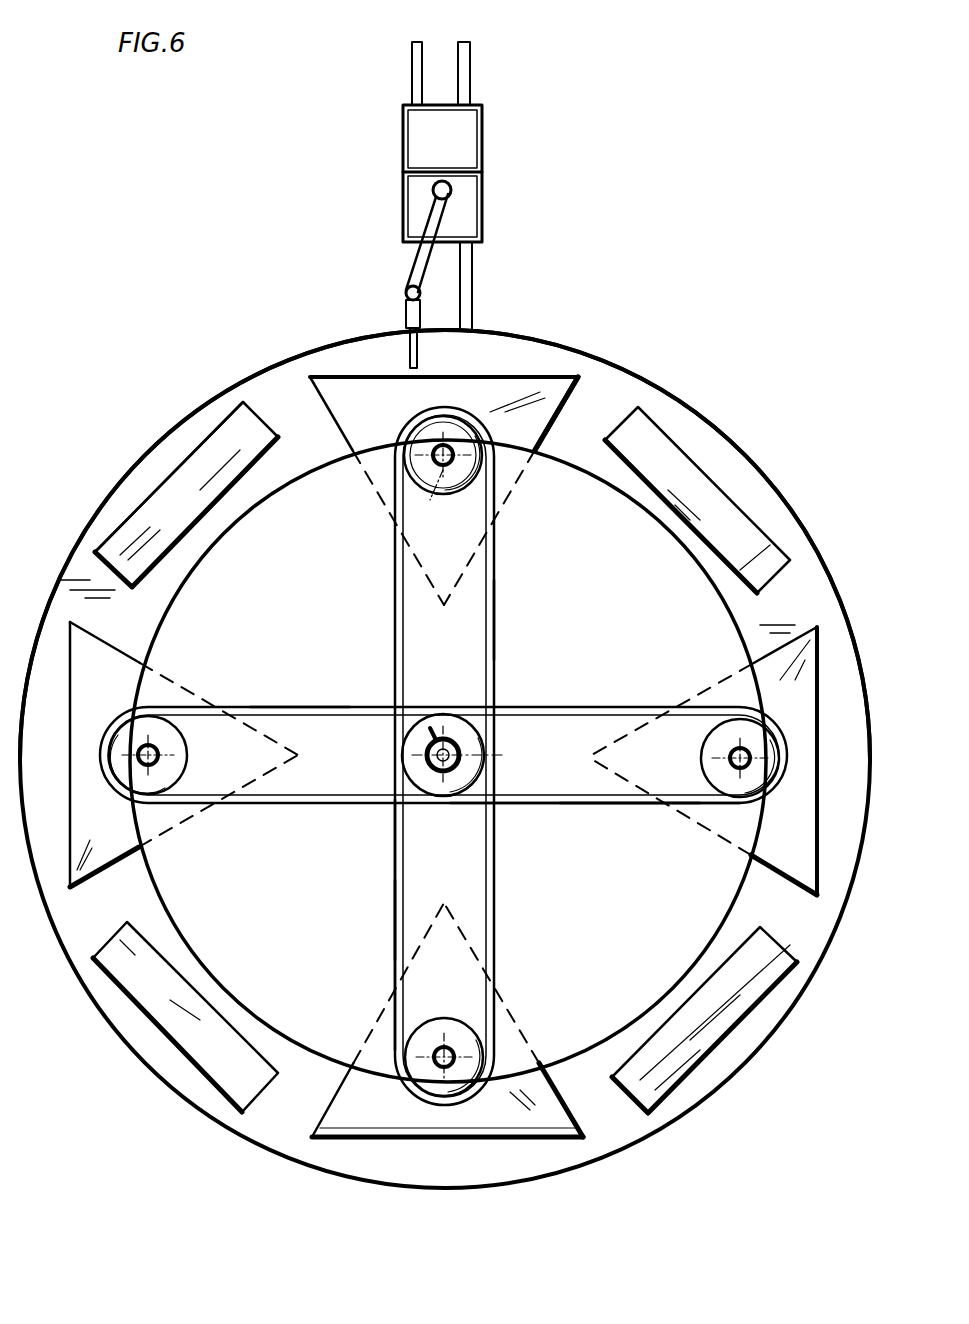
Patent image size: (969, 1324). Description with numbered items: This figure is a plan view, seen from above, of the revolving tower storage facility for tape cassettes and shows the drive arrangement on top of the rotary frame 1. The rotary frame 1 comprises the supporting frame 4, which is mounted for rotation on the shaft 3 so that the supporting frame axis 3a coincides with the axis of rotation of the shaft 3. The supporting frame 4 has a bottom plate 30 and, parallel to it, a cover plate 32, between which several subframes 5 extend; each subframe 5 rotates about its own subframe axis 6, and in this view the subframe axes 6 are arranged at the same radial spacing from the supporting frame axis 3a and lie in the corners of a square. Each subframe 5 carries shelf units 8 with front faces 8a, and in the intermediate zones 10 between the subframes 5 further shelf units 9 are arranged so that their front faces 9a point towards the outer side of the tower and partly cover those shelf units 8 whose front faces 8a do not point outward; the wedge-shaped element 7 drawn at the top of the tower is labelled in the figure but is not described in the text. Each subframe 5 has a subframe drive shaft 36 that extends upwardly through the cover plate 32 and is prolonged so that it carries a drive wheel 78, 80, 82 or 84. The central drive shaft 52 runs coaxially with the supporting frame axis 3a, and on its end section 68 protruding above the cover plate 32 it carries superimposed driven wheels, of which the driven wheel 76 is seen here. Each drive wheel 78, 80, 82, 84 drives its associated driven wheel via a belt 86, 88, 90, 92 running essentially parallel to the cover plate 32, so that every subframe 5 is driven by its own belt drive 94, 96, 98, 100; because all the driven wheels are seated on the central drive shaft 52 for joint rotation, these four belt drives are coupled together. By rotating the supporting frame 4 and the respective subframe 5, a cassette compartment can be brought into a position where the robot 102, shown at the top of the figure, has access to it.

The rotary frame 1 is at (738, 427).
The shaft 3 is at (432, 733).
The supporting frame axis 3a is at (500, 762).
The supporting frame 4 is at (600, 410).
The subframe 5 is at (352, 352).
The subframe axis 6 is at (447, 468).
The wedge block 7 is at (313, 379).
The shelf unit 8 is at (492, 360).
The front face 8a is at (525, 372).
The further shelf unit 9 is at (193, 470).
The front face 9a is at (152, 490).
The intermediate zone 10 is at (126, 600).
The bottom plate 30 is at (847, 637).
The cover plate 32 is at (745, 627).
The subframe drive shaft 36 is at (426, 465).
The central drive shaft 52 is at (433, 770).
The end section 68 is at (443, 780).
The driven wheel 76 is at (418, 742).
The drive wheel 78 is at (422, 1035).
The drive wheel 80 is at (730, 788).
The drive wheel 82 is at (468, 472).
The drive wheel 84 is at (167, 743).
The belt 86 is at (398, 970).
The belt 88 is at (682, 808).
The belt 90 is at (487, 547).
The belt 92 is at (238, 705).
The belt drive 94 is at (382, 910).
The belt drive 96 is at (618, 820).
The belt drive 98 is at (505, 617).
The belt drive 100 is at (307, 685).
The robot 102 is at (415, 200).